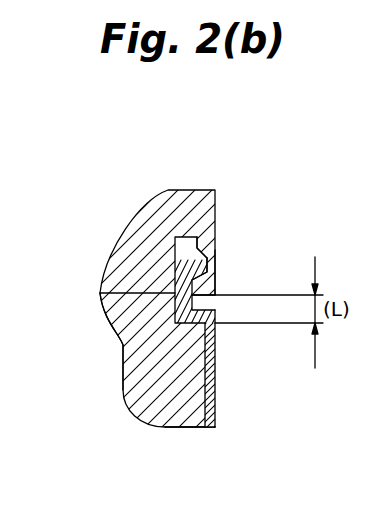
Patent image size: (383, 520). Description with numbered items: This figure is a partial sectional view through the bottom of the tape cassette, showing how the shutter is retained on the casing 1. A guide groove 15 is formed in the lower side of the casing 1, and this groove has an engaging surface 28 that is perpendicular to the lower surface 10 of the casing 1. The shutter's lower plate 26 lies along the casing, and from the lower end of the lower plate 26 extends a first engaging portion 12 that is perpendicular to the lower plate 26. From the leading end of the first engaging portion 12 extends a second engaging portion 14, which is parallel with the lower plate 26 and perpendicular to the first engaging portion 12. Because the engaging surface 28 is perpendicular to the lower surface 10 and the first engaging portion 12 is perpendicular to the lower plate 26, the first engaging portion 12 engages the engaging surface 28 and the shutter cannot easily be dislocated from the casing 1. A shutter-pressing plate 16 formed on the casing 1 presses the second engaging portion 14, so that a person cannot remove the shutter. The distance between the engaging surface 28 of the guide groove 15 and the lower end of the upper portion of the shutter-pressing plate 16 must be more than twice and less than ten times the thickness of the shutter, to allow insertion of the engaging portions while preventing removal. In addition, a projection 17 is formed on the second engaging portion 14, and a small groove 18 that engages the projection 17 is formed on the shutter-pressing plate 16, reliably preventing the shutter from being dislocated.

The casing 1 is at (170, 195).
The lower surface 10 is at (213, 427).
The first engaging portion 12 is at (217, 325).
The second engaging portion 14 is at (175, 293).
The guide groove 15 is at (175, 240).
The shutter-pressing plate 16 is at (212, 288).
The projection 17 is at (197, 252).
The small groove 18 is at (205, 268).
The lower plate 26 is at (216, 375).
The engaging surface 28 is at (128, 345).